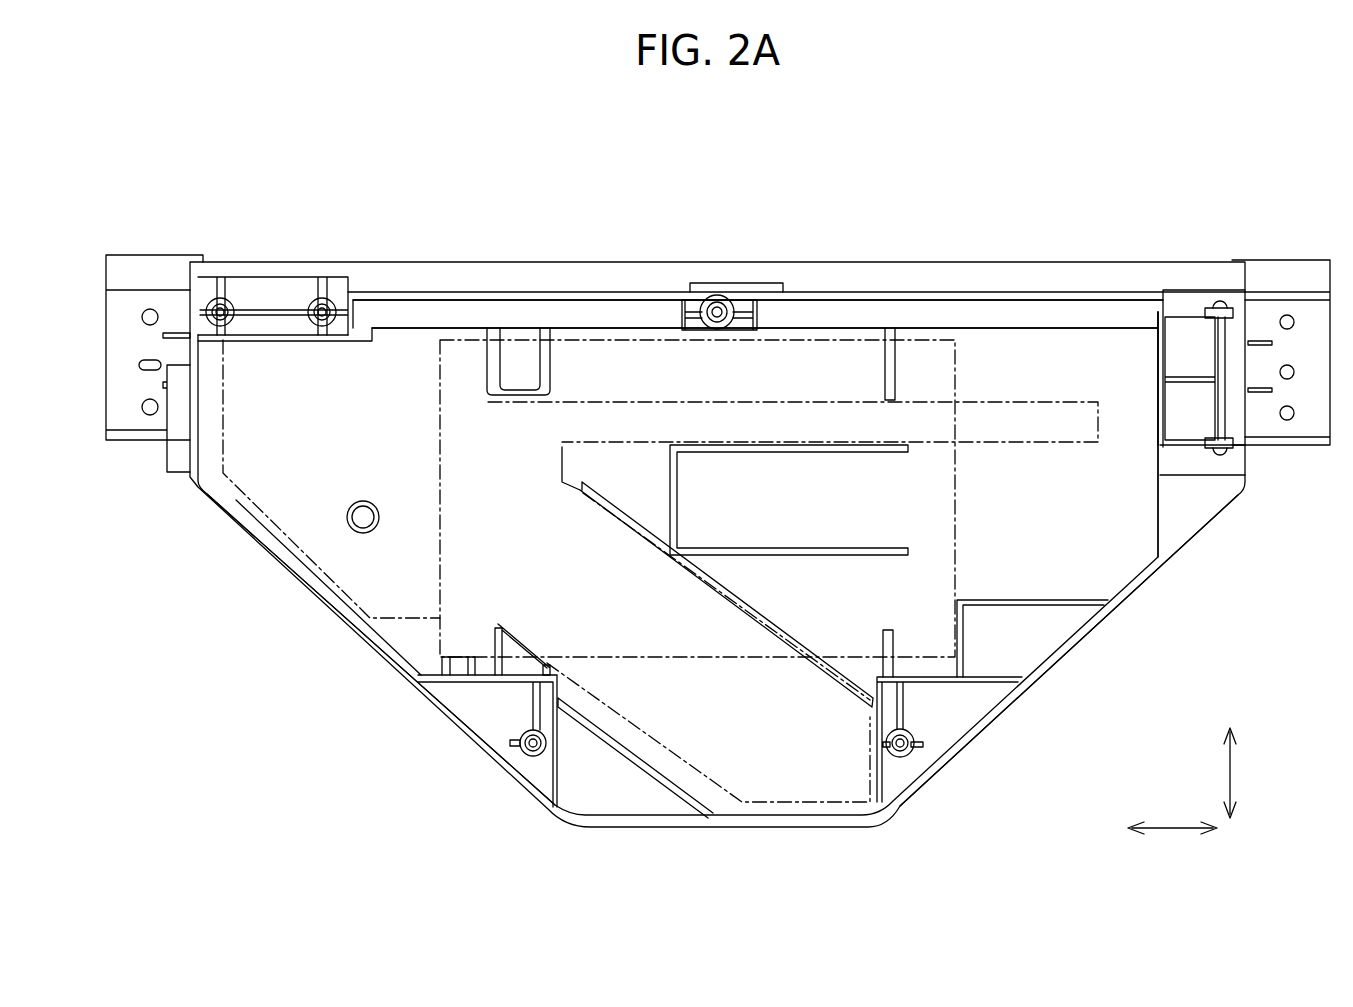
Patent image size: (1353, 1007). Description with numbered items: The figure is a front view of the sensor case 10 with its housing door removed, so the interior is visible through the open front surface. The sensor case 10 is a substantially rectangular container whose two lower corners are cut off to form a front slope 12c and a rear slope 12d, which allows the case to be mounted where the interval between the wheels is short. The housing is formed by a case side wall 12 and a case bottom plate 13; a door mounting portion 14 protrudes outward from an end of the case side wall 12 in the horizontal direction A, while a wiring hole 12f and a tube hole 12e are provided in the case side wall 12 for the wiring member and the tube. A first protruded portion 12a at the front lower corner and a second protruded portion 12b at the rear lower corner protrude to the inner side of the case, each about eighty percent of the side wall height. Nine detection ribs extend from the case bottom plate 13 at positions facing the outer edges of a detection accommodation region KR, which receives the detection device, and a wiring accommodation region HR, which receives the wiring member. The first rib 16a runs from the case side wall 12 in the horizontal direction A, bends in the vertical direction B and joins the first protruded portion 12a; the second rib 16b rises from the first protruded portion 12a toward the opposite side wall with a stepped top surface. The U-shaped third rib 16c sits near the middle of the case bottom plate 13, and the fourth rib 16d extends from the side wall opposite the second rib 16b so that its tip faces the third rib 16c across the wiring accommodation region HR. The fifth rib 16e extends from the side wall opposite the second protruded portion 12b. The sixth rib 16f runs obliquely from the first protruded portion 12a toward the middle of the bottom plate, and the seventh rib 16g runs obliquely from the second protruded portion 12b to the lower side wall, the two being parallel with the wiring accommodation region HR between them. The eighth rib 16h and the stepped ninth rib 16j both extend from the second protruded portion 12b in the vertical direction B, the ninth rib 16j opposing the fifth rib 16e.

The sensor case 10 is at (247, 152).
The case side wall 12 is at (840, 318).
The first protruded portion 12a is at (932, 690).
The second protruded portion 12b is at (462, 683).
The front slope 12c is at (1092, 628).
The rear slope 12d is at (357, 640).
The tube hole 12e is at (1157, 395).
The wiring hole 12f is at (270, 343).
The case bottom plate 13 is at (1078, 347).
The door mounting portion 14 is at (1220, 300).
The first rib 16a is at (957, 622).
The second rib 16b is at (882, 643).
The third rib 16c is at (675, 497).
The fourth rib 16d is at (887, 362).
The fifth rib 16e is at (550, 362).
The sixth rib 16f is at (620, 522).
The seventh rib 16g is at (632, 742).
The eighth rib 16h is at (438, 665).
The ninth rib 16j is at (520, 638).
The detection accommodation region KR is at (953, 363).
The wiring accommodation region HR is at (277, 560).
The horizontal direction A is at (1172, 849).
The vertical direction B is at (1241, 773).